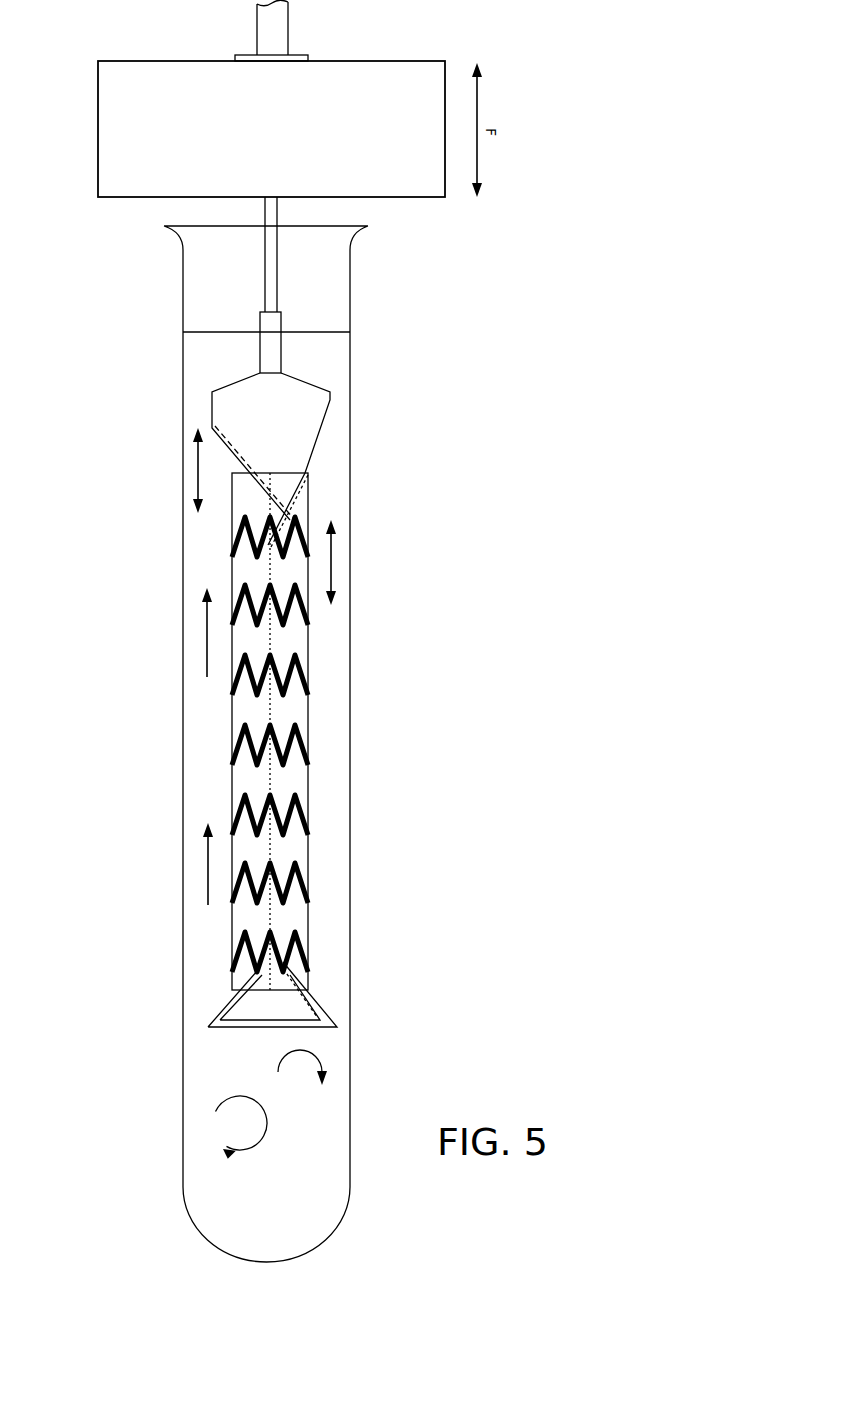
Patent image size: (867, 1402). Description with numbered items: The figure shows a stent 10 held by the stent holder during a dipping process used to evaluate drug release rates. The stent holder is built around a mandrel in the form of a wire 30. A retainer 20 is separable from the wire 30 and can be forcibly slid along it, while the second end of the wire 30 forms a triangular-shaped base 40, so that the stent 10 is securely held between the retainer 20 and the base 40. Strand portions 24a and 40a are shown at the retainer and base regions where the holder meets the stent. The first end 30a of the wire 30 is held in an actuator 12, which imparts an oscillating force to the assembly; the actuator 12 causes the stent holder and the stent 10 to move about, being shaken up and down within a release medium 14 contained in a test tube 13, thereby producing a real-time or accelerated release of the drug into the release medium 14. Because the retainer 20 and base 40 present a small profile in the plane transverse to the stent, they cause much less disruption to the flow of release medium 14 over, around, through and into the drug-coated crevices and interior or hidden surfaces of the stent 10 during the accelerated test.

The stent 10 is at (232, 752).
The actuator 12 is at (98, 118).
The test tube 13 is at (350, 781).
The release medium 14 is at (313, 1200).
The retainer 20 is at (323, 423).
The holder strand 24a is at (308, 468).
The wire 30 is at (358, 858).
The first end of the wire 30a is at (300, 216).
The base 40 is at (323, 1015).
The lower holder strand 40a is at (307, 992).